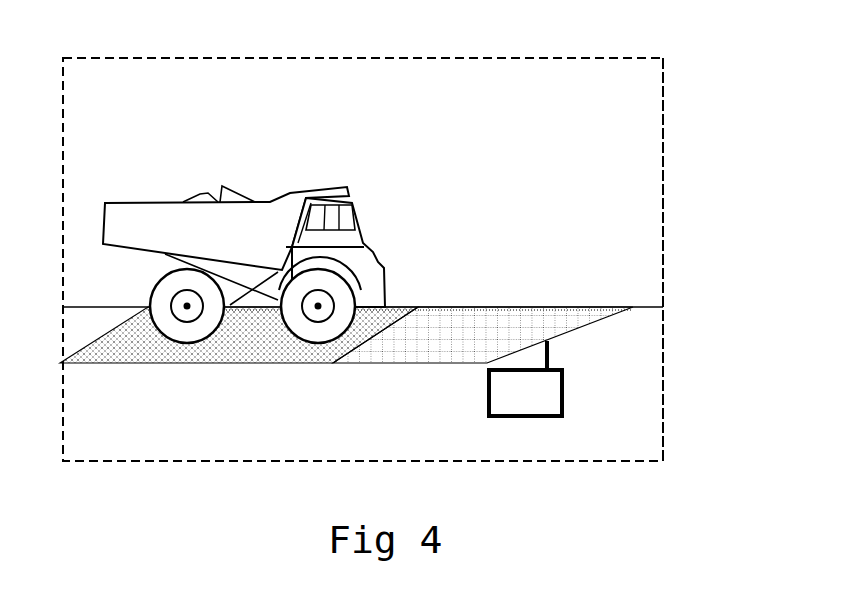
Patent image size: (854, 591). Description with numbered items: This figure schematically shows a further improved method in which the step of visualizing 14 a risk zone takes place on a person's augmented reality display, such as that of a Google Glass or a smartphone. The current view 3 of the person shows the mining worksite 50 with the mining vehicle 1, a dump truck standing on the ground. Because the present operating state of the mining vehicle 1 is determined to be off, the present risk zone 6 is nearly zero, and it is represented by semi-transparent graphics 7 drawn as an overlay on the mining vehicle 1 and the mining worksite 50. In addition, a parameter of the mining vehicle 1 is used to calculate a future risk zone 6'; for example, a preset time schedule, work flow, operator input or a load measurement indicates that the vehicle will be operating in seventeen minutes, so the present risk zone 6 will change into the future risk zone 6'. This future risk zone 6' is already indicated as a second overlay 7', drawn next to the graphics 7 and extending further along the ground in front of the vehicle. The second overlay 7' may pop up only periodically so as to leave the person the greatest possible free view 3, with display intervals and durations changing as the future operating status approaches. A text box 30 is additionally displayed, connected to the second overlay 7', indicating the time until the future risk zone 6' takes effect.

The mining vehicle 1 is at (314, 163).
The current view 3 is at (651, 160).
The risk zone 6 is at (268, 286).
The future risk zone 6' is at (541, 284).
The graphics 7 is at (239, 353).
The second overlay 7' is at (483, 371).
The visualizing 14 is at (696, 33).
The text box 30 is at (563, 378).
The mining worksite 50 is at (146, 110).